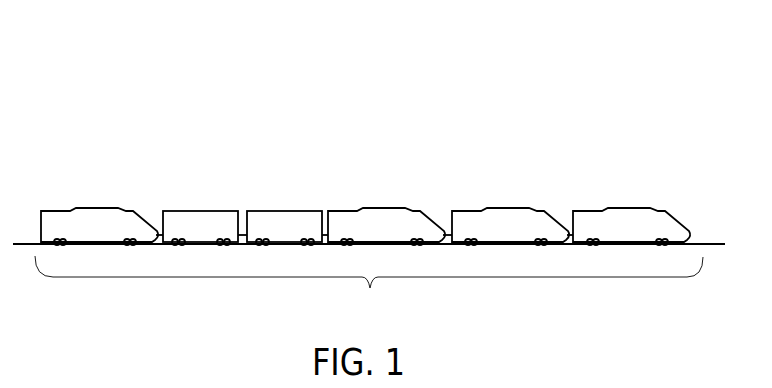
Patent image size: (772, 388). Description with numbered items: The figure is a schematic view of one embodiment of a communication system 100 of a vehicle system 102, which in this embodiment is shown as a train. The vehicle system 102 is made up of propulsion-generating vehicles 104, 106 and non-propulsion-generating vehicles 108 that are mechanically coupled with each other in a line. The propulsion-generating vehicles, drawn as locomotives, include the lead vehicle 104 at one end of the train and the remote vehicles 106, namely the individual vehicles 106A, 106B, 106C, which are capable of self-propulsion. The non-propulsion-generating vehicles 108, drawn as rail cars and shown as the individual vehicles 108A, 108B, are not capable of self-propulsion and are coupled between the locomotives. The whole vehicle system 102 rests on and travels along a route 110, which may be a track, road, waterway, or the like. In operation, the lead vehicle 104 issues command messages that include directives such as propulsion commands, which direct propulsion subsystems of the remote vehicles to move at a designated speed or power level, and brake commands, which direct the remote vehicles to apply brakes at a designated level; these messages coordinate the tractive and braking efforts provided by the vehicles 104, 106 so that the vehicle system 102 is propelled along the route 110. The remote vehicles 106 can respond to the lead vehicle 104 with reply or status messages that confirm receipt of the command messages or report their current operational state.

The communication system 100 is at (665, 97).
The vehicle system 102 is at (369, 222).
The lead vehicle 104 is at (623, 207).
The remote vehicles 106 is at (543, 196).
The remote vehicle 106A is at (502, 207).
The remote vehicle 106B is at (377, 206).
The remote vehicle 106C is at (90, 207).
The non-propulsion-generating vehicles 108 is at (320, 196).
The non-propulsion-generating vehicle 108A is at (280, 208).
The non-propulsion-generating vehicle 108B is at (198, 207).
The route 110 is at (707, 243).